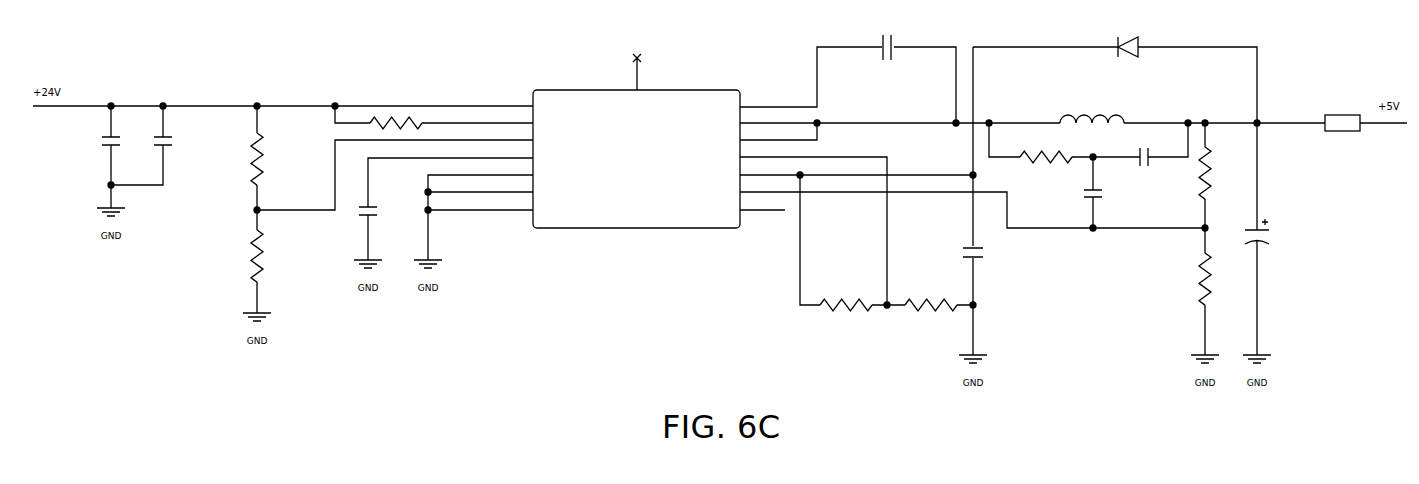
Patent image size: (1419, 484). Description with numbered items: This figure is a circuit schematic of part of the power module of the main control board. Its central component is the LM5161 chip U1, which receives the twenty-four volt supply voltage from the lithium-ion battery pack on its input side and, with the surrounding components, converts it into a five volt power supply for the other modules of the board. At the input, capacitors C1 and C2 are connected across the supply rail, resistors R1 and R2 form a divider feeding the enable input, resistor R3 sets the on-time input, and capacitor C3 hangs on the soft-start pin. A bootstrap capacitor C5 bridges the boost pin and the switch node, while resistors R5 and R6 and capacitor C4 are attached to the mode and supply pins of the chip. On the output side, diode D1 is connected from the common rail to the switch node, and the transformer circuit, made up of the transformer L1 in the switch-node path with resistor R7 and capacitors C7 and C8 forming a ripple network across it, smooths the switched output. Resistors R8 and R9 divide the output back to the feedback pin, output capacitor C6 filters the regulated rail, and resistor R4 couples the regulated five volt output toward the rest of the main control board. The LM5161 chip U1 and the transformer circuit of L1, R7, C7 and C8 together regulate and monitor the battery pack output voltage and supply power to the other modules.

The capacitor C1 is at (118, 173).
The capacitor C2 is at (151, 145).
The resistor R1 is at (266, 159).
The resistor R2 is at (262, 278).
The on-time resistor R3 is at (434, 117).
The capacitor C3 is at (443, 225).
The LM5161 regulator U1 is at (637, 151).
The bootstrap capacitor C5 is at (848, 71).
The resistor R5 is at (845, 243).
The resistor R6 is at (931, 298).
The capacitor C4 is at (979, 217).
The diode SD103AWS-7-F D1 is at (1115, 74).
The transformer L1 is at (1092, 113).
The resistor R7 is at (1042, 143).
The capacitor C7 is at (1140, 144).
The capacitor C8 is at (1102, 192).
The feedback resistor R8 is at (1214, 175).
The feedback resistor R9 is at (1210, 308).
The output capacitor C6 is at (1266, 255).
The output resistor R4 is at (1342, 116).